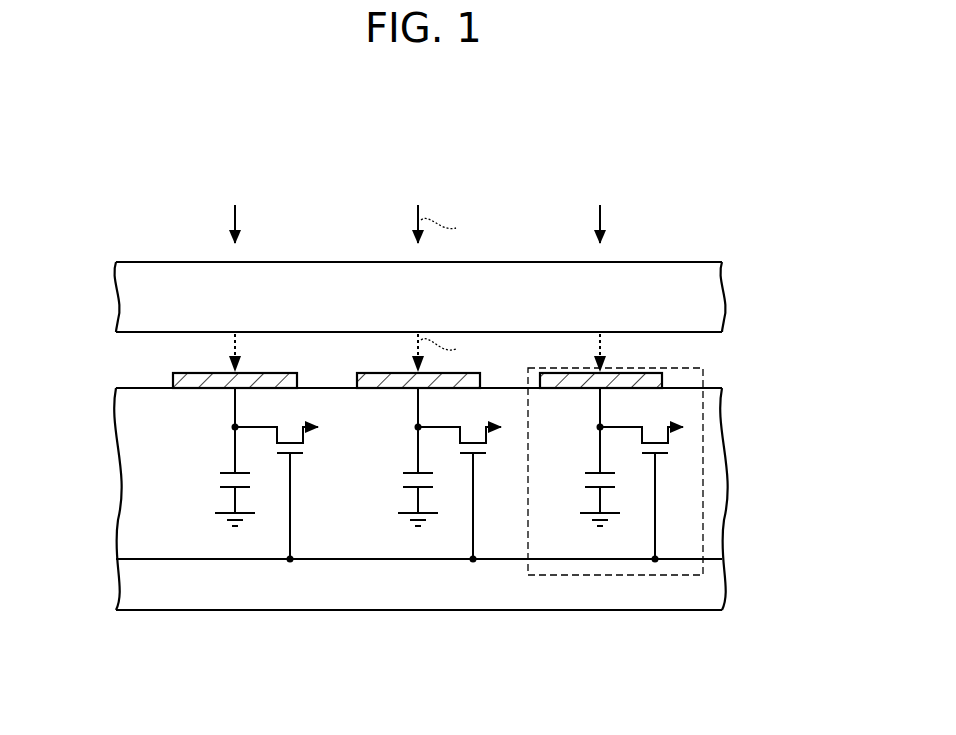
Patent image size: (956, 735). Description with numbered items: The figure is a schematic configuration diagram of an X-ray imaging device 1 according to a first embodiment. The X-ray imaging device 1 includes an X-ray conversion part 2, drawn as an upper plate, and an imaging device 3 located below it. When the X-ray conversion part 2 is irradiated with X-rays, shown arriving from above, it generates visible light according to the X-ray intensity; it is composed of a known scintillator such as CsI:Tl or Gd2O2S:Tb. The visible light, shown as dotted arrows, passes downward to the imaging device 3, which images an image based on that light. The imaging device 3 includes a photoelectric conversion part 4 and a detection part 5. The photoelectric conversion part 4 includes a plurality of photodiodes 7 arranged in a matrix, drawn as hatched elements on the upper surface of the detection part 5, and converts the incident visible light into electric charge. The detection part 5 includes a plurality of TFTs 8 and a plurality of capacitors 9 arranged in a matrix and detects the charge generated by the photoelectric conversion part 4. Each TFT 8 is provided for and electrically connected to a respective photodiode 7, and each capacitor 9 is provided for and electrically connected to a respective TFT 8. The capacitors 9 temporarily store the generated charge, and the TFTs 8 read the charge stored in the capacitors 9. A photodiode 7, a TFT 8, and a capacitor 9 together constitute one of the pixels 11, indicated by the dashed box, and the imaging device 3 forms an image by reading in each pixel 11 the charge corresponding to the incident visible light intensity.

The X-ray imaging device 1 is at (452, 190).
The X-ray conversion part 2 is at (705, 300).
The imaging device 3 is at (437, 515).
The photoelectric conversion part 4 is at (168, 377).
The detection part 5 is at (176, 487).
The photodiode 7 is at (647, 371).
The TFT 8 is at (307, 460).
The capacitor 9 is at (257, 490).
The pixel 11 is at (656, 515).